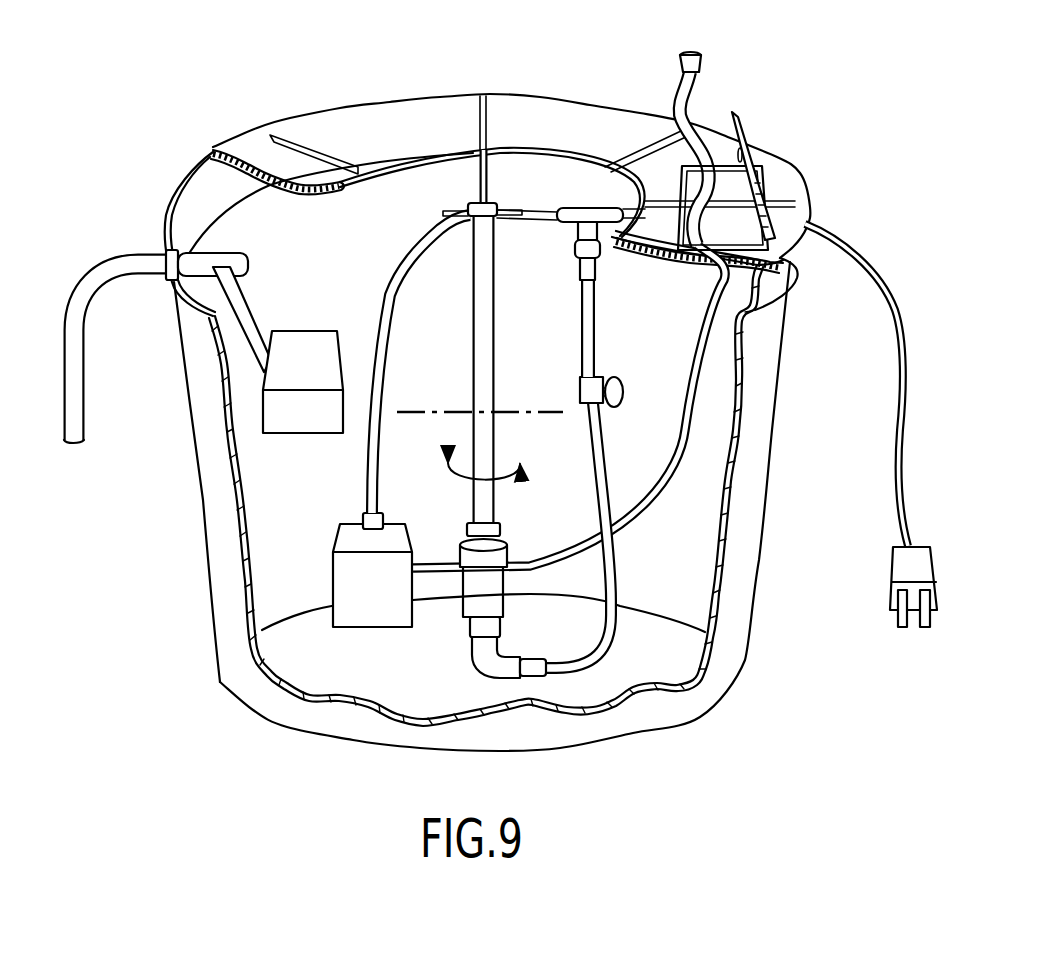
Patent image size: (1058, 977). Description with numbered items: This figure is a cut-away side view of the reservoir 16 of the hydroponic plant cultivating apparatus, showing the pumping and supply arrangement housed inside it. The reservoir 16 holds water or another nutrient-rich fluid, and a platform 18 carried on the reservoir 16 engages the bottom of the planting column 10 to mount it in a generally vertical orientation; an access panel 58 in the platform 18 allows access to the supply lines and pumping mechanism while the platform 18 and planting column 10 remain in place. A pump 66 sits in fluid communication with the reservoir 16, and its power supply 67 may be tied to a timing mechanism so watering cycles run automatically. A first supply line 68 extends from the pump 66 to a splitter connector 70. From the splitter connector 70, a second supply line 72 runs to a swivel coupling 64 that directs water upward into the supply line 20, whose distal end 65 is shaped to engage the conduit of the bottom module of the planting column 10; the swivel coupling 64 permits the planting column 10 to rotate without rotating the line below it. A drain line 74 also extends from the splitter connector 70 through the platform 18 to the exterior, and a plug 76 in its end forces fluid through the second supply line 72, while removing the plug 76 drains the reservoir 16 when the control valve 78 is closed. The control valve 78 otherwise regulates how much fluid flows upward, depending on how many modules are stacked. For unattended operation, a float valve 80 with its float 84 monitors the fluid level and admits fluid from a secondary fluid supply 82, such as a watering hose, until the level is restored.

The planting column 10 is at (402, 420).
The reservoir 16 is at (740, 475).
The platform 18 is at (797, 192).
The supply line 20 is at (538, 192).
The access panel 58 is at (747, 183).
The swivel coupling 64 is at (474, 603).
The distal end of supply line 65 is at (476, 205).
The pump 66 is at (360, 590).
The power supply 67 is at (863, 247).
The first supply line 68 is at (422, 248).
The splitter connector 70 is at (594, 213).
The second supply line 72 is at (615, 580).
The drain line 74 is at (688, 107).
The plug 76 is at (708, 48).
The control valve 78 is at (598, 366).
The float valve 80 is at (281, 283).
The secondary fluid supply 82 is at (90, 280).
The float 84 is at (298, 425).